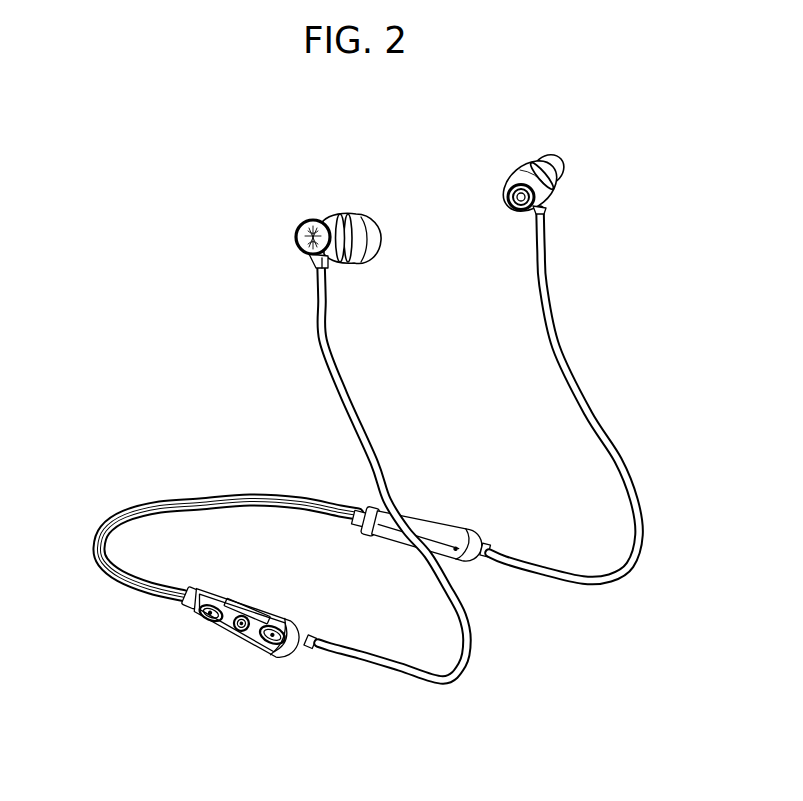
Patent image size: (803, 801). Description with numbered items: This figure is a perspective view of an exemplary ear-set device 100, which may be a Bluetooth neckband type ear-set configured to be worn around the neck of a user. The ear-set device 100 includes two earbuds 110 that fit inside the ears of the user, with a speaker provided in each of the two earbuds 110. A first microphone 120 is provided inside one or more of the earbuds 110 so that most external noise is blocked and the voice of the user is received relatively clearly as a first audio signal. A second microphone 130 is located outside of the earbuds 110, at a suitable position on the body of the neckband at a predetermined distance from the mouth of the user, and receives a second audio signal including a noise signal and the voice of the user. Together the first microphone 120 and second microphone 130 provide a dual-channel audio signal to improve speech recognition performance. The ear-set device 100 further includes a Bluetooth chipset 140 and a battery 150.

The ear-set device 100 is at (268, 214).
The earbuds 110 is at (515, 179).
The first microphone 120 is at (540, 210).
The second microphone 130 is at (458, 552).
The Bluetooth chipset 140 is at (187, 607).
The battery 150 is at (261, 616).